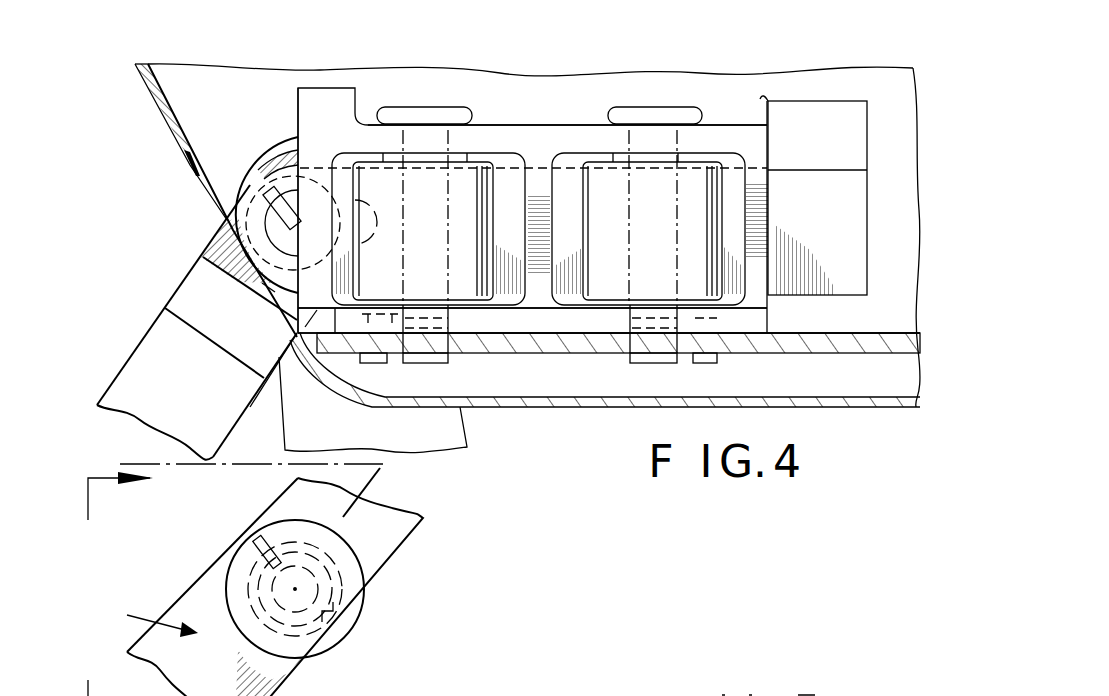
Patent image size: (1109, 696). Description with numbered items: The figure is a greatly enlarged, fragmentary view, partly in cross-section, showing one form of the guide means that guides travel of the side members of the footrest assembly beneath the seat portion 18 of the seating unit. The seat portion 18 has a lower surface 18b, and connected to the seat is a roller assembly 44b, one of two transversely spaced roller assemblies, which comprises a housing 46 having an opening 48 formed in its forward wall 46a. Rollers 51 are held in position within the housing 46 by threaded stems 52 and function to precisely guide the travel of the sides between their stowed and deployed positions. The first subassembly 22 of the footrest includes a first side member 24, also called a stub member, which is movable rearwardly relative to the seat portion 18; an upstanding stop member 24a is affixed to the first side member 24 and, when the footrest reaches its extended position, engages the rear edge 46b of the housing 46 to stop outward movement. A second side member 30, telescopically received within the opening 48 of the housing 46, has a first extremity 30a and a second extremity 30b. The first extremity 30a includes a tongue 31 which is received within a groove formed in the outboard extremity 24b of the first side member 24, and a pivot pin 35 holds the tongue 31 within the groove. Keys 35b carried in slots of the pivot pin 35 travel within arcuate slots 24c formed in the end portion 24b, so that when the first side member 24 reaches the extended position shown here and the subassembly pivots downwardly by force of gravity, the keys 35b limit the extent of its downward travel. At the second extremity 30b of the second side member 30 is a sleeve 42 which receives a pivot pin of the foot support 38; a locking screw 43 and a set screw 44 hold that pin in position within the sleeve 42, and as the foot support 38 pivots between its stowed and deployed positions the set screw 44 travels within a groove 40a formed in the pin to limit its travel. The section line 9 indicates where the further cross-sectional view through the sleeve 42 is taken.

The seat portion 18 is at (150, 122).
The lower surface 18b is at (582, 410).
The first subassembly 22 is at (803, 305).
The first side members 24 is at (573, 338).
The stop members 24a is at (838, 112).
The outboard extremity 24b is at (255, 196).
The arcuate slots 24c is at (292, 203).
The second side members 30 is at (145, 350).
The first extremity 30a is at (205, 284).
The second extremity 30b is at (363, 562).
The tongue 31 is at (268, 162).
The pivot pins 35 is at (283, 243).
The keys 35b is at (262, 218).
The foot support 38 is at (144, 617).
The grooves 40a is at (224, 588).
The sleeves 42 is at (327, 640).
The locking screws 43 is at (187, 584).
The set screws 44 is at (252, 550).
The roller assembly 44b is at (523, 118).
The housing 46 is at (583, 132).
The forward wall 46a is at (296, 122).
The rear edge 46b is at (773, 145).
The opening 48 is at (283, 303).
The rollers 51 is at (450, 229).
The threaded stem 52 is at (395, 106).
The section line 9 is at (222, 580).